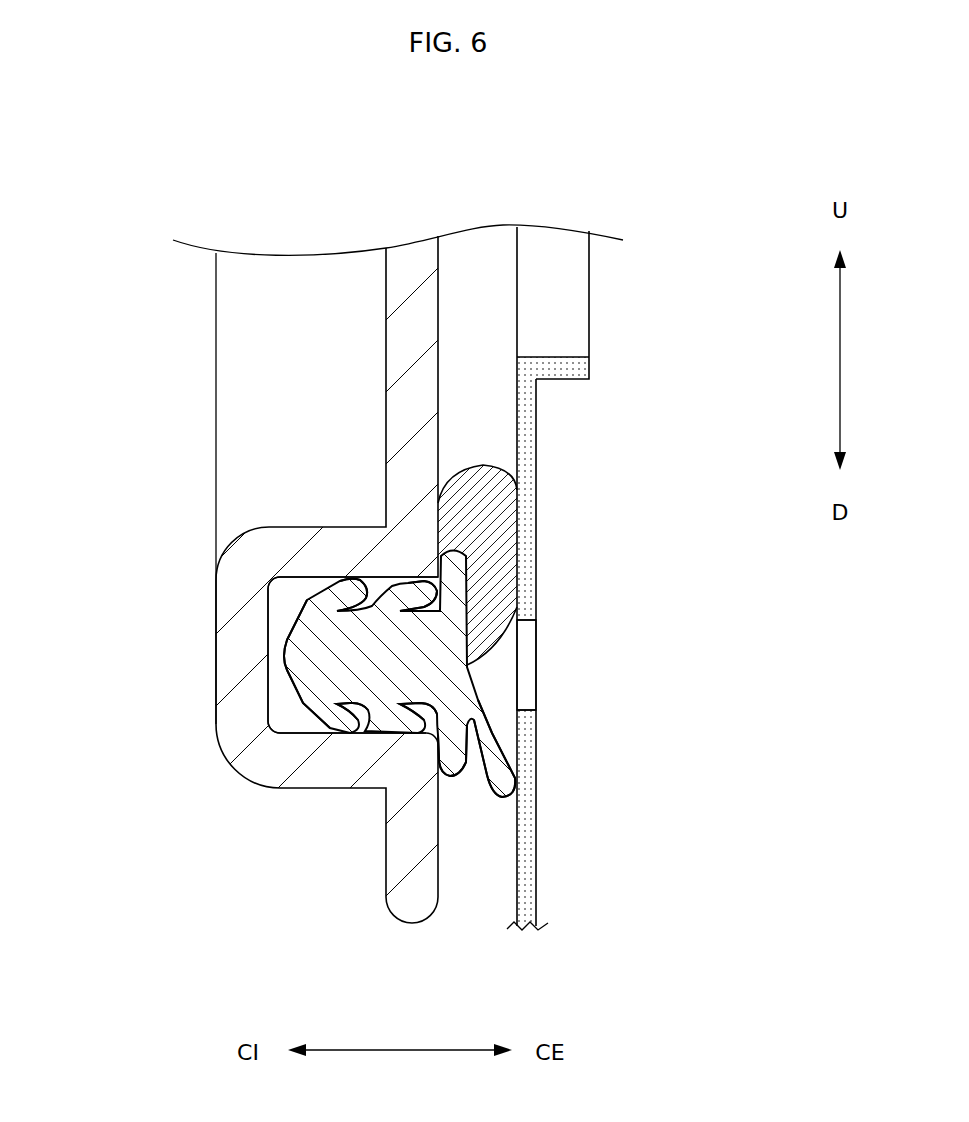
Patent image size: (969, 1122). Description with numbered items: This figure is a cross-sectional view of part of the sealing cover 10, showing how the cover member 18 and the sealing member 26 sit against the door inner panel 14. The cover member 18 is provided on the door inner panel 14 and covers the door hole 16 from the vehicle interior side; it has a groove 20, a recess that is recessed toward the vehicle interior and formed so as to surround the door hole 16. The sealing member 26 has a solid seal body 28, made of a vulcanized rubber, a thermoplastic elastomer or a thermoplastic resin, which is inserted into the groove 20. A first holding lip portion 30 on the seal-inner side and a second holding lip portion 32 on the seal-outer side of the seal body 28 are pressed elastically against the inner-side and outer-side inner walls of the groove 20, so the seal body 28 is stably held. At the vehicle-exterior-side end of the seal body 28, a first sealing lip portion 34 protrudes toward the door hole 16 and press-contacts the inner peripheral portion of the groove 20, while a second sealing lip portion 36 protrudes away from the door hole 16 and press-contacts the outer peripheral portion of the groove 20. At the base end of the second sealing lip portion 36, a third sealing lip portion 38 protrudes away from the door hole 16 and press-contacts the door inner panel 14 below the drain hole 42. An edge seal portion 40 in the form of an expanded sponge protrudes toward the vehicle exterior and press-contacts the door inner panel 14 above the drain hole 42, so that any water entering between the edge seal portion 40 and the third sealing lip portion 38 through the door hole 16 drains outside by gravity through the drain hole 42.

The sealing cover 10 is at (160, 479).
The door inner panel 14 is at (537, 878).
The door hole 16 is at (553, 357).
The cover member 18 is at (212, 605).
The groove 20 is at (297, 733).
The sealing member 26 is at (280, 641).
The seal body 28 is at (287, 668).
The first holding lip portion 30 is at (427, 577).
The second holding lip portion 32 is at (417, 733).
The first sealing lip portion 34 is at (480, 591).
The second sealing lip portion 36 is at (455, 772).
The third sealing lip portion 38 is at (493, 741).
The edge seal portion 40 is at (517, 537).
The drain hole 42 is at (523, 710).